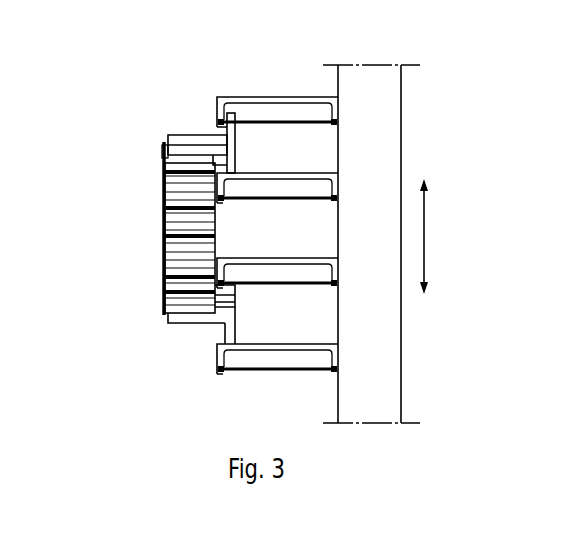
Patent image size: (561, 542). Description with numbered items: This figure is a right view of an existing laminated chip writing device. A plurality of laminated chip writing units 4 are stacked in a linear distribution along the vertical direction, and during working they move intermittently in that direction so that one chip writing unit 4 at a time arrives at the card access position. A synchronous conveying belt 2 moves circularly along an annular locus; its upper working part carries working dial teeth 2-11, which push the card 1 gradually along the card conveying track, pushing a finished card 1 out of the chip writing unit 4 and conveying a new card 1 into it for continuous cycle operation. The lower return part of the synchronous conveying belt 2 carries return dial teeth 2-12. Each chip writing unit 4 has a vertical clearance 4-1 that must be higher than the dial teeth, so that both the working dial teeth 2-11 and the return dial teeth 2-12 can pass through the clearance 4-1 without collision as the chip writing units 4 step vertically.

The card 1 is at (277, 120).
The synchronous conveying belt 2 is at (177, 217).
The working dial teeth 2-11 is at (226, 136).
The return dial teeth 2-12 is at (225, 327).
The chip writing unit 4 is at (272, 173).
The clearance 4-1 is at (241, 143).